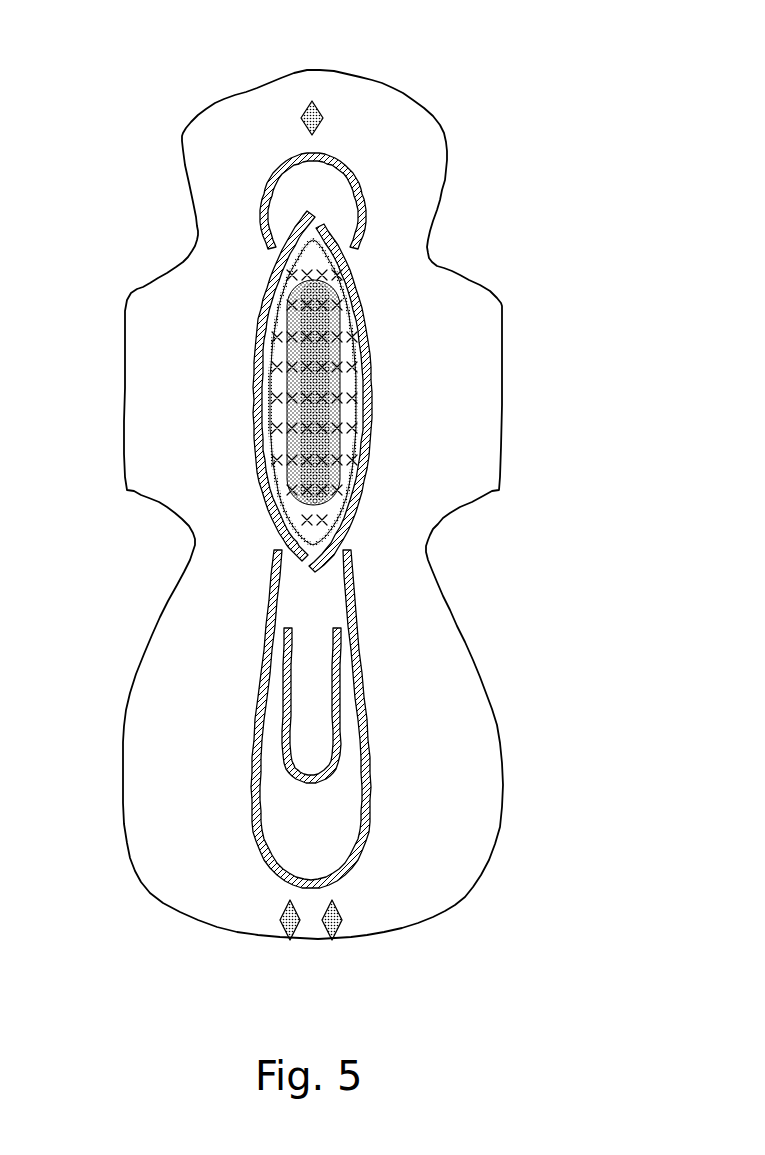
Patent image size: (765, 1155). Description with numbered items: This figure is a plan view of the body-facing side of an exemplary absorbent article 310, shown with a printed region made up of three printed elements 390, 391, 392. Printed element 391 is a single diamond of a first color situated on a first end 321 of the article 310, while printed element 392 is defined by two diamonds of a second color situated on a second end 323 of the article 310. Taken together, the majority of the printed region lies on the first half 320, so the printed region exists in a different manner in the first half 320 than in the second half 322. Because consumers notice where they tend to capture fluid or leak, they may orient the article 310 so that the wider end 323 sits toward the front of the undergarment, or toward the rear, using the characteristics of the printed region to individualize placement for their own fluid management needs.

The article 310 is at (484, 145).
The first half 320 is at (157, 234).
The first end 321 is at (182, 139).
The second half 322 is at (546, 790).
The second end 323 is at (482, 889).
The printed element 390 is at (254, 418).
The printed element 391 is at (318, 104).
The printed element 392 is at (333, 941).